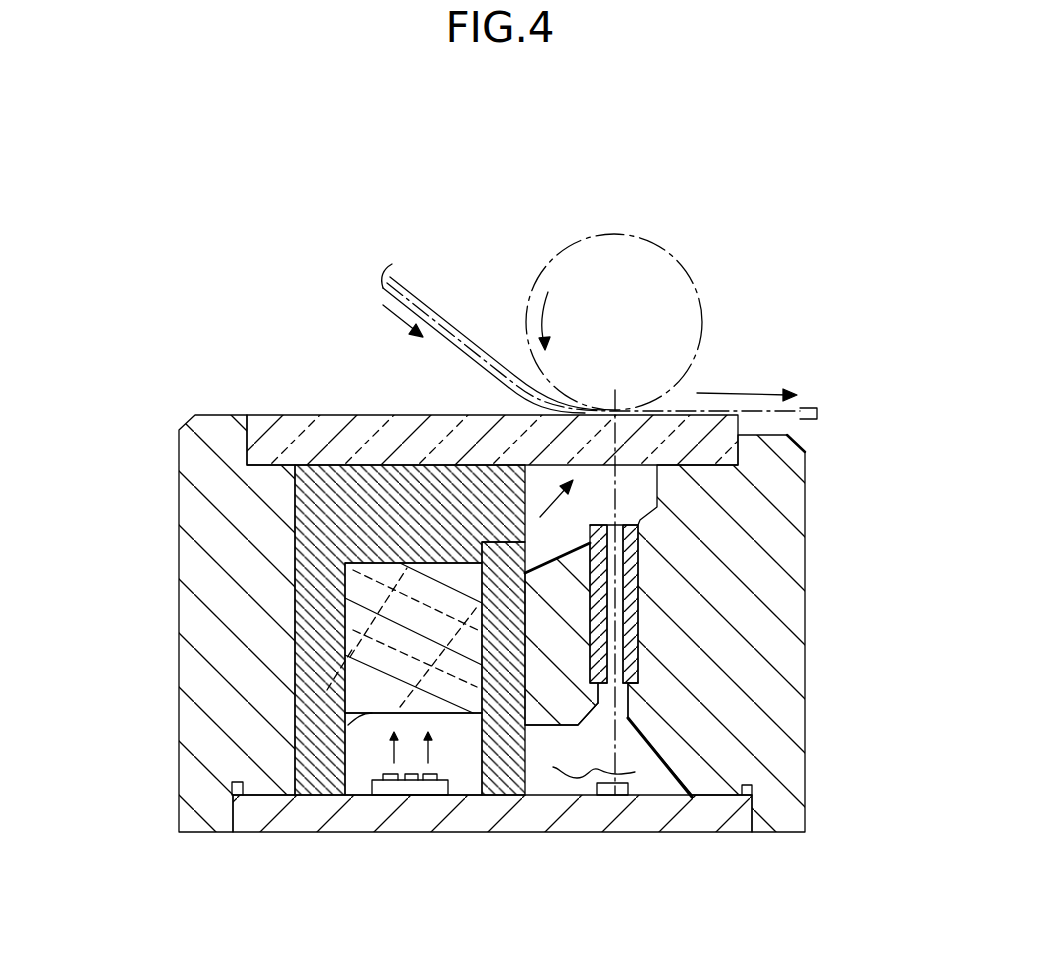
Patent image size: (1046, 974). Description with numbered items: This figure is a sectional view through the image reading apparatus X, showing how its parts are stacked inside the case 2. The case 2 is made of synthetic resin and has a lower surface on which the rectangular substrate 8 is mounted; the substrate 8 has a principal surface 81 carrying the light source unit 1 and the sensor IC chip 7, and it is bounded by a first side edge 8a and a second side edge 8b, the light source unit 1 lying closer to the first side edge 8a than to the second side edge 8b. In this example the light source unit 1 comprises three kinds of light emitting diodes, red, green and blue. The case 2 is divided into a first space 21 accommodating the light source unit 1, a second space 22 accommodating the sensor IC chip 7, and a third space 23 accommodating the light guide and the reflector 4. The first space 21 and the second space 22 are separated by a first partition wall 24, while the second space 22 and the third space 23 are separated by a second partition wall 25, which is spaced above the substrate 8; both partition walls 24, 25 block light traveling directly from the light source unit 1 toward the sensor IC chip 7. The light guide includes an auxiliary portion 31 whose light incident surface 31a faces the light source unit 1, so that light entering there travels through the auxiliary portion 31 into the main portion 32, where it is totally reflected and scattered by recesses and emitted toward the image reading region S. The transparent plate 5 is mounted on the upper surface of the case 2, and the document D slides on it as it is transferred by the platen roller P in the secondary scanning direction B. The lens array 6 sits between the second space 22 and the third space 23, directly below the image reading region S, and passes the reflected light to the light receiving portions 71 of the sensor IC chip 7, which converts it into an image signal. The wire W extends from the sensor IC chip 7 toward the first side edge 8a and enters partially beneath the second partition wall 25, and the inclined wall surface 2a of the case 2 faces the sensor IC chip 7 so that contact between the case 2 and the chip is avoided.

The light source unit 1 is at (418, 794).
The case 2 is at (775, 575).
The inclined wall surface 2a is at (647, 737).
The reflector 4 is at (310, 777).
The transparent plate 5 is at (720, 455).
The lens array 6 is at (587, 545).
The sensor IC chip 7 is at (628, 787).
The light receiving portion 71 is at (629, 727).
The substrate 8 is at (680, 812).
The first side edge 8a is at (233, 793).
The second side edge 8b is at (752, 792).
The first space 21 is at (363, 777).
The second space 22 is at (547, 783).
The third space 23 is at (545, 485).
The first partition wall 24 is at (363, 745).
The second partition wall 25 is at (575, 707).
The auxiliary portion 31 is at (397, 688).
The light incident surface 31a is at (372, 714).
The main portion 32 is at (345, 582).
The principal surface 81 is at (470, 783).
The secondary scanning direction arrow B is at (747, 378).
The document D is at (420, 298).
The platen roller P is at (697, 290).
The image reading region S is at (617, 410).
The wire W is at (583, 756).
The image reading apparatus X is at (143, 402).